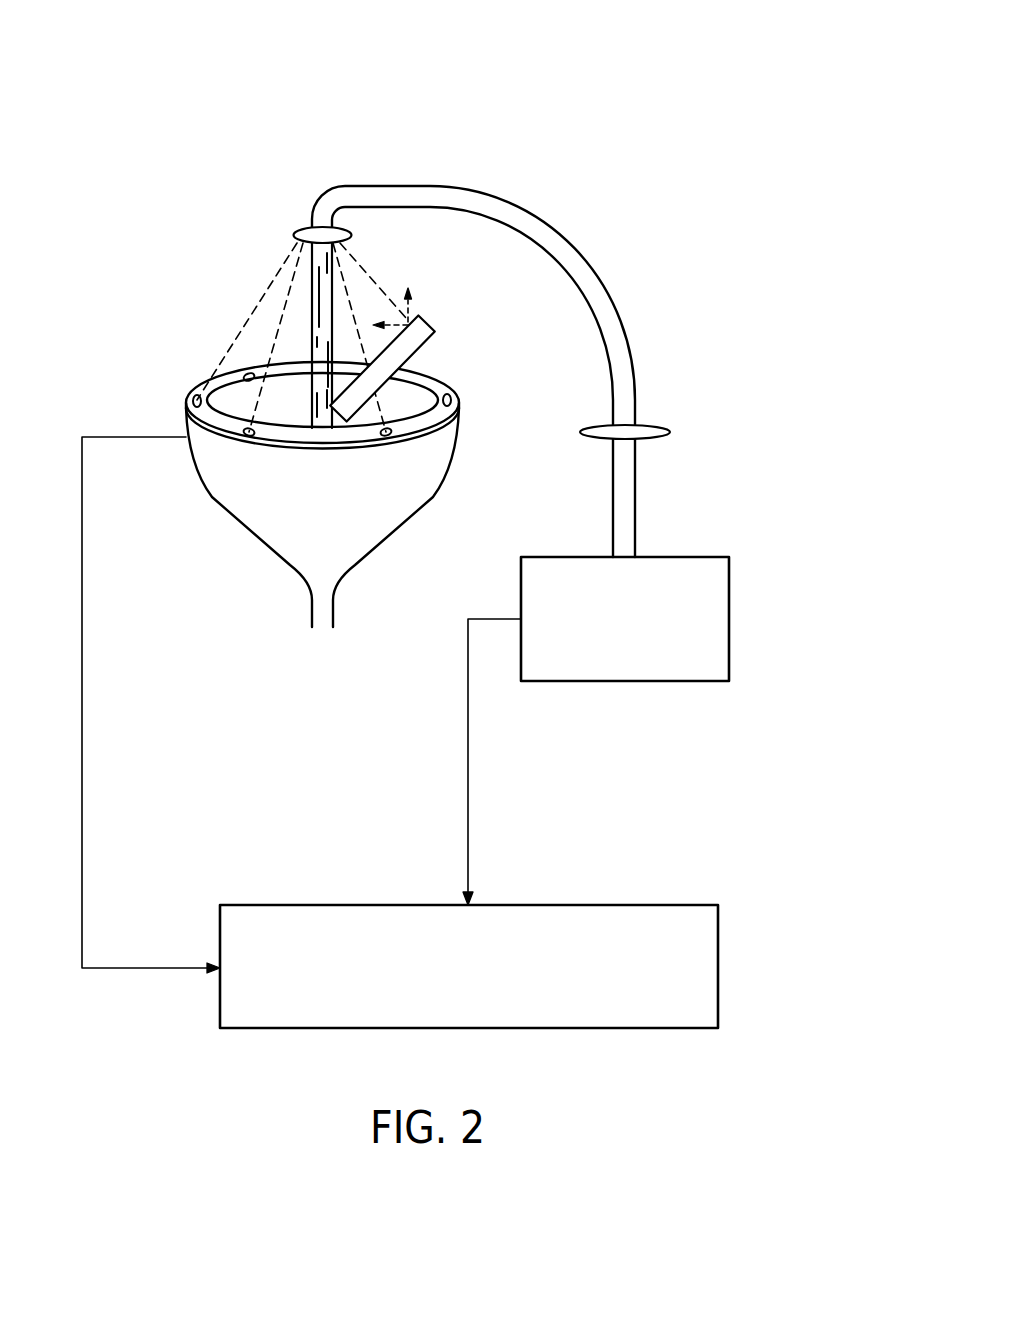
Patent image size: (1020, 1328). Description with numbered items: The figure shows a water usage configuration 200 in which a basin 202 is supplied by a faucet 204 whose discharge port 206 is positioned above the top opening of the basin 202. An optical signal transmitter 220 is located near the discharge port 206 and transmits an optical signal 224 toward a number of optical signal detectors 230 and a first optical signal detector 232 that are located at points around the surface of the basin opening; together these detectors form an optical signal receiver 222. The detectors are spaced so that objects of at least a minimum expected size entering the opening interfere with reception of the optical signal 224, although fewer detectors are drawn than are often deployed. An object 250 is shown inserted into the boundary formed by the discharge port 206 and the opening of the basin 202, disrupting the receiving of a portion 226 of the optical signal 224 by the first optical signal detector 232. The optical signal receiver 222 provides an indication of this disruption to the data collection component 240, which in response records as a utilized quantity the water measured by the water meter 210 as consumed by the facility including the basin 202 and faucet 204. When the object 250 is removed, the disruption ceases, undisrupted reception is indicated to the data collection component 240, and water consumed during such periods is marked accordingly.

The water usage configuration 200 is at (590, 96).
The basin 202 is at (257, 542).
The faucet 204 is at (392, 186).
The discharge port 206 is at (322, 186).
The water meter 210 is at (690, 557).
The optical signal transmitter 220 is at (296, 235).
The optical signal receiver 222 is at (187, 407).
The optical signal 224 is at (253, 303).
The portion of the optical signal 226 is at (377, 270).
The optical signal detectors 230 is at (408, 463).
The first optical signal detector 232 is at (451, 399).
The data collection component 240 is at (588, 905).
The object 250 is at (424, 323).